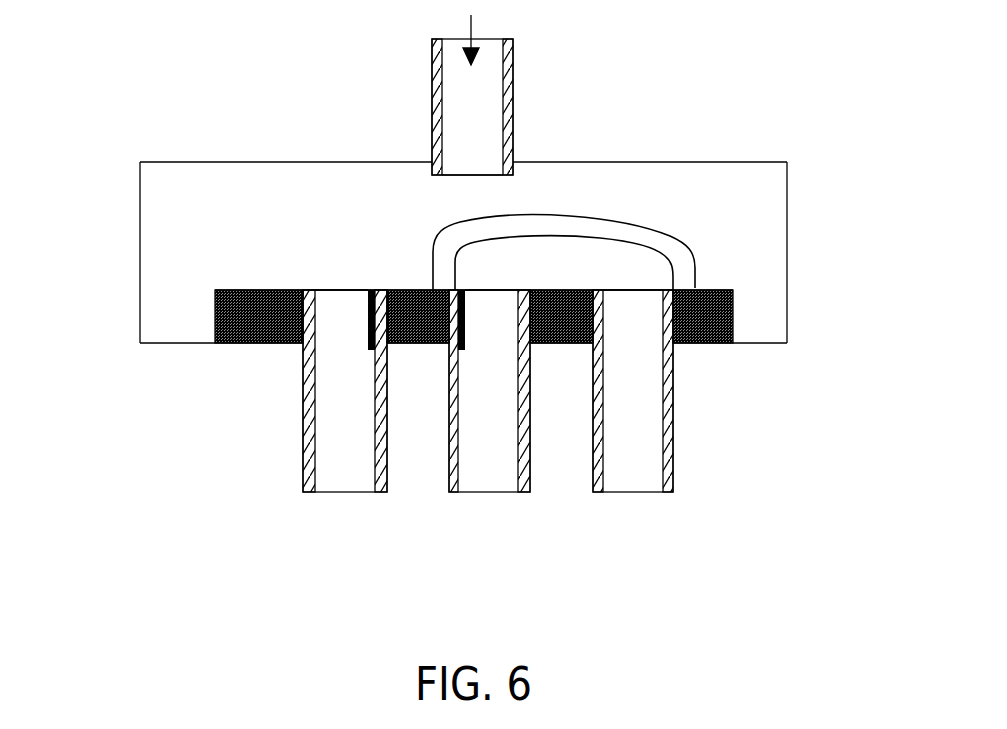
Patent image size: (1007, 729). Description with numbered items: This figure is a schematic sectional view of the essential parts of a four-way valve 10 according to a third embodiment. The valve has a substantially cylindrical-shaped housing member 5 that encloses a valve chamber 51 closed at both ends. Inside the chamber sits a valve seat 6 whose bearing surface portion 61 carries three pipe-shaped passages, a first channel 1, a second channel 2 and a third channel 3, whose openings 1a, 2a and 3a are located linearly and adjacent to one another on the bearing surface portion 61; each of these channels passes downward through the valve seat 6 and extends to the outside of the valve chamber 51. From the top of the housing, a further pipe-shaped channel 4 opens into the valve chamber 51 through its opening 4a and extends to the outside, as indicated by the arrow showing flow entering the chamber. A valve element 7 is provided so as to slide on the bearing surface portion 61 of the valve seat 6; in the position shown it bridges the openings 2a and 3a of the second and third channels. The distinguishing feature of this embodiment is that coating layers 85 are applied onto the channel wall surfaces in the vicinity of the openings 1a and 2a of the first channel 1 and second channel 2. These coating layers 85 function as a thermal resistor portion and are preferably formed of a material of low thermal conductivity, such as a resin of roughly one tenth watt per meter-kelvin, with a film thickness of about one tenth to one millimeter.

The four-way valve 10 is at (140, 70).
The housing member 5 is at (465, 251).
The valve chamber 51 is at (163, 215).
The bearing surface portion 61 is at (450, 304).
The valve seat 6 is at (733, 308).
The channel 4 is at (516, 92).
The opening of channel 4a is at (490, 173).
The first channel 1 is at (329, 395).
The opening of first channel 1a is at (343, 289).
The second channel 2 is at (564, 353).
The opening of second channel 2a is at (483, 290).
The third channel 3 is at (705, 289).
The opening of third channel 3a is at (637, 290).
The valve element 7 is at (690, 277).
The coating layer 85 is at (368, 343).